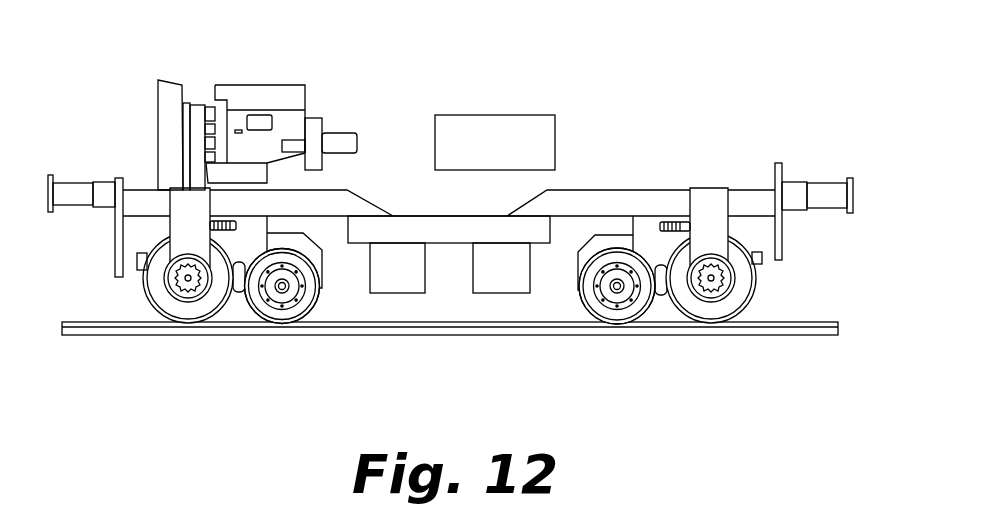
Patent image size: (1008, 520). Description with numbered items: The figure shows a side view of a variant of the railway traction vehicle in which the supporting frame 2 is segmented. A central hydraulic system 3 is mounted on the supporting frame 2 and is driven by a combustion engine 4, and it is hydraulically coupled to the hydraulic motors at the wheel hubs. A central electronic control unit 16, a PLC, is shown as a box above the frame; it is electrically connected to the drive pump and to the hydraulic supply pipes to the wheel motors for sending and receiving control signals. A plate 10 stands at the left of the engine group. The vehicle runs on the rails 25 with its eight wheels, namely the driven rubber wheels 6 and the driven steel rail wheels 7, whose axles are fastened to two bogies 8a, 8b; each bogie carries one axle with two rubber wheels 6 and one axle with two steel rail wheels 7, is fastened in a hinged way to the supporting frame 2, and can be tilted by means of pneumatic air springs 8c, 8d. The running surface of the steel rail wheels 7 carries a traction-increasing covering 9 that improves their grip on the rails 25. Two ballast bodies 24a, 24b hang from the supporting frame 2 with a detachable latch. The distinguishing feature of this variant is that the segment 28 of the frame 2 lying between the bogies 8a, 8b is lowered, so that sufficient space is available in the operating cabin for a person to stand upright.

The supporting frame 2 is at (653, 200).
The central hydraulic system 3 is at (313, 128).
The combustion engine 4 is at (235, 97).
The driven rubber wheels 6 is at (177, 303).
The driven steel rail wheels 7 is at (285, 312).
The bogie 8a is at (297, 243).
The bogie 8b is at (606, 236).
The pneumatic air spring 8c is at (140, 261).
The pneumatic air spring 8d is at (762, 262).
The traction-increasing covering 9 is at (320, 288).
The mounting plate 10 is at (172, 128).
The central electronic control unit 16 is at (532, 123).
The ballast body 24a is at (411, 262).
The ballast body 24b is at (503, 262).
The rails 25 is at (108, 331).
The segment of frame 28 is at (463, 225).